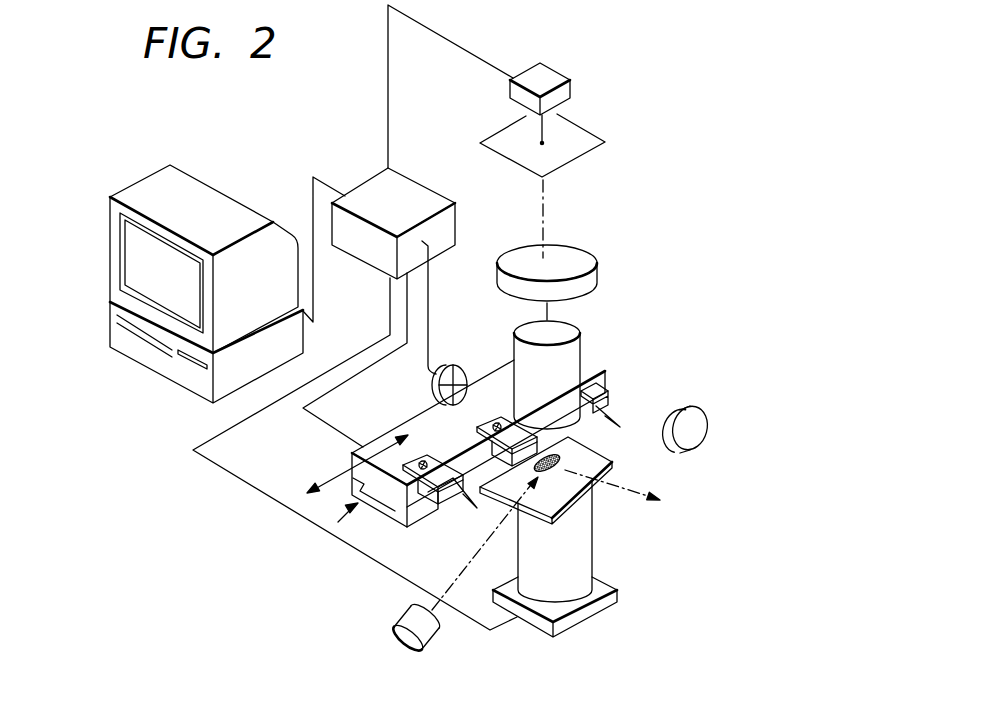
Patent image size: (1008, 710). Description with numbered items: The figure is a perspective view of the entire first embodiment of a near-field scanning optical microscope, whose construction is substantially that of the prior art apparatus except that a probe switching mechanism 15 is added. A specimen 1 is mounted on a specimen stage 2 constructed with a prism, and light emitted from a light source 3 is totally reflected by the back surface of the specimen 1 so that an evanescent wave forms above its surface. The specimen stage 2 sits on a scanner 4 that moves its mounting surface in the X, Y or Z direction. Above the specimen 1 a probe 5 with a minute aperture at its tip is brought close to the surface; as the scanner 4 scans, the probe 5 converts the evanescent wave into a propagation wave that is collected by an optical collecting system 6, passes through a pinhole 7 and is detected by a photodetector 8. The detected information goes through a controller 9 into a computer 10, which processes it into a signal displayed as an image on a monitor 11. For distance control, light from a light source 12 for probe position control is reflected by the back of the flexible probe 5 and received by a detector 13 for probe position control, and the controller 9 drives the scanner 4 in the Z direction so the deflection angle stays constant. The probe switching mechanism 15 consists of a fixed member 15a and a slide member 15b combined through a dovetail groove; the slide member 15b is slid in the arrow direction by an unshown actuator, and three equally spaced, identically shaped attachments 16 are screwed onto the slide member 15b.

The specimen 1 is at (610, 452).
The specimen stage 2 is at (563, 498).
The light source 3 is at (433, 640).
The scanner 4 is at (563, 563).
The probe 5 is at (470, 505).
The optical collecting system 6 is at (600, 290).
The pinhole 7 is at (580, 133).
The photodetector 8 is at (550, 75).
The controller 9 is at (367, 185).
The computer 10 is at (183, 380).
The monitor 11 is at (200, 196).
The light source for probe position control 12 is at (700, 417).
The detector for probe position control 13 is at (440, 367).
The probe switching mechanism 15 is at (343, 519).
The fixed member 15a is at (400, 513).
The slide member 15b is at (415, 417).
The attachments 16 is at (438, 455).